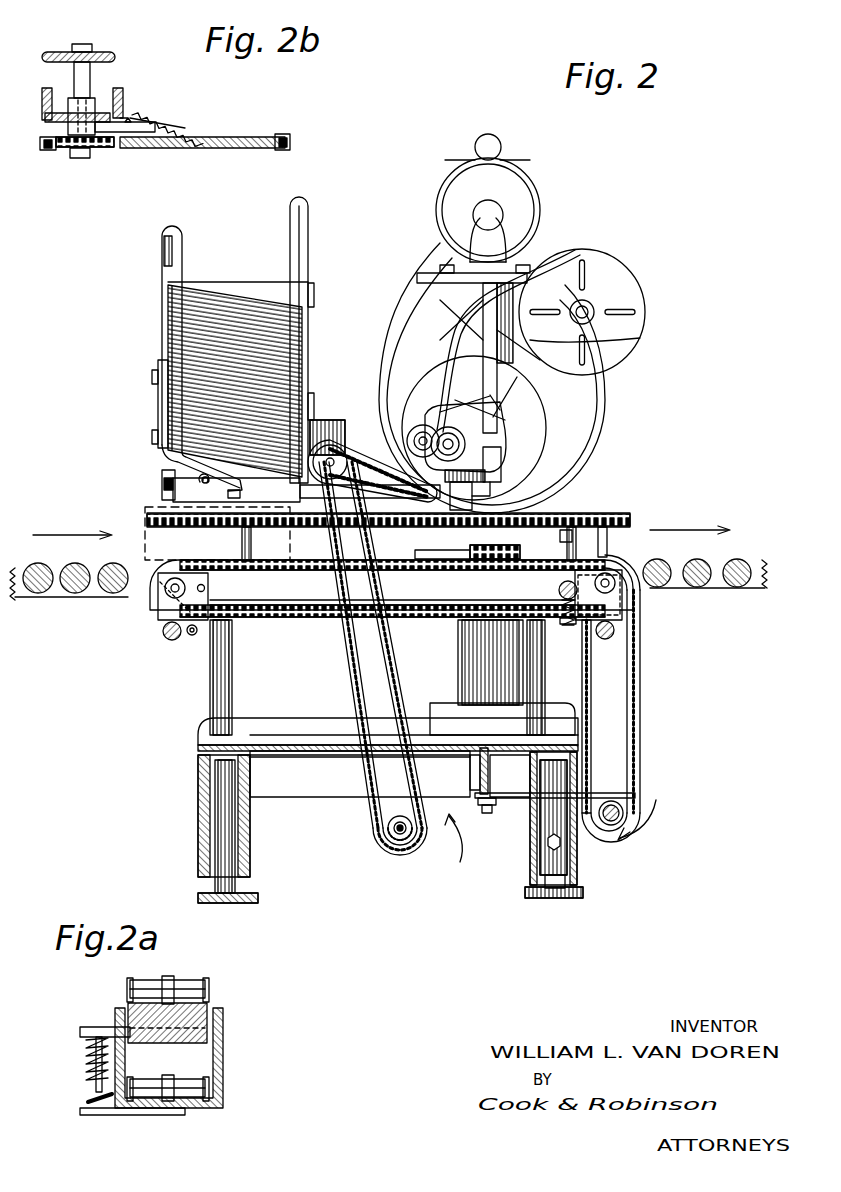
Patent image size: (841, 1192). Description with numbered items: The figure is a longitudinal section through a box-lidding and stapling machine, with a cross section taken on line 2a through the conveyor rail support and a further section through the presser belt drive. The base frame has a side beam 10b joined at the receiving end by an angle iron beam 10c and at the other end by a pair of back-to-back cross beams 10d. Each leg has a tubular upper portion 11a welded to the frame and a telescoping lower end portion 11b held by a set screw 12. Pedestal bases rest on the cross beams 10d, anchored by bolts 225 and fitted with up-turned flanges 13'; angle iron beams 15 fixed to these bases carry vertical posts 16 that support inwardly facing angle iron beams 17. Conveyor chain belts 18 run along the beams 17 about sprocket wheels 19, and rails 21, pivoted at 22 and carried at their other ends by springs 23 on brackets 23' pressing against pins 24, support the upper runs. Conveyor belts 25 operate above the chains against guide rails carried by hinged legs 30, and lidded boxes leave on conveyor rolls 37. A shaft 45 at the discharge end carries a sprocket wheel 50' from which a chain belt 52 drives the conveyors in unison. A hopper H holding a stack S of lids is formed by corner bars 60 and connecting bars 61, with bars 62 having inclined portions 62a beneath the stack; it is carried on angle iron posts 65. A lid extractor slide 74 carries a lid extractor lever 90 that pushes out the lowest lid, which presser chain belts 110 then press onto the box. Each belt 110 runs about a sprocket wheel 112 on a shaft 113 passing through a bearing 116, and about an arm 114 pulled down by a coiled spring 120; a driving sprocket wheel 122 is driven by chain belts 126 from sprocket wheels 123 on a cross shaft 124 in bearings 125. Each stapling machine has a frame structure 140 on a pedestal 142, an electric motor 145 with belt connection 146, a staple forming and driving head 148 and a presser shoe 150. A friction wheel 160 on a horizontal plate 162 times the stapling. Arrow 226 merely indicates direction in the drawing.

In FIG. 2, the section line 2a is at (576, 600).
In FIG. 2, the side beam 10b is at (290, 798).
In FIG. 2, the angle iron beam 10c is at (205, 770).
In FIG. 2, the cross beams 10d is at (480, 772).
In FIG. 2, the tubular upper portion 11a is at (200, 820).
In FIG. 2, the lower end portion 11b is at (205, 860).
In FIG. 2, the set screw 12 is at (565, 845).
In FIG. 2, the up-turned flanges 13' is at (468, 711).
In FIG. 2, the angle iron beams 15 is at (265, 728).
In FIG. 2, the vertical posts 16 is at (210, 710).
In FIG. 2, the angle iron beams 17 is at (425, 618).
In FIG. 2A, the angle iron beams 17 is at (223, 1055).
In FIG. 2, the conveyor chain belts 18 is at (282, 568).
In FIG. 2A, the conveyor chain belts 18 is at (185, 978).
In FIG. 2, the sprocket wheels 19 is at (163, 598).
In FIG. 2, the rails 21 is at (265, 602).
In FIG. 2A, the rails 21 is at (180, 1025).
In FIG. 2, the pivot 22 is at (197, 592).
In FIG. 2, the springs 23 is at (630, 609).
In FIG. 2A, the springs 23 is at (76, 1069).
In FIG. 2, the brackets 23' is at (611, 698).
In FIG. 2A, the brackets 23' is at (132, 1127).
In FIG. 2, the pins 24 is at (560, 592).
In FIG. 2A, the pins 24 is at (82, 1030).
In FIG. 2, the conveyor belts 25 is at (146, 520).
In FIG. 2, the legs 30 is at (242, 542).
In FIG. 2, the conveyor rolls 37 is at (712, 562).
In FIG. 2, the shaft 45 is at (640, 810).
In FIG. 2, the sprocket wheel 50' is at (666, 827).
In FIG. 2, the chain belt 52 is at (640, 746).
In FIG. 2, the corner bars 60 is at (160, 242).
In FIG. 2, the connecting bars 61 is at (254, 282).
In FIG. 2, the bars 62 is at (157, 398).
In FIG. 2, the inclined portions 62a is at (165, 460).
In FIG. 2B, the angle iron posts 65 is at (122, 118).
In FIG. 2, the angle iron posts 65 is at (342, 425).
In FIG. 2, the lid extractor slide 74 is at (190, 498).
In FIG. 2, the lid extractor lever 90 is at (162, 485).
In FIG. 2B, the presser chain belts 110 is at (290, 139).
In FIG. 2, the presser chain belts 110 is at (355, 485).
In FIG. 2B, the sprocket wheel 112 is at (102, 150).
In FIG. 2, the sprocket wheel 112 is at (323, 420).
In FIG. 2, the shaft 113 is at (343, 438).
In FIG. 2B, the arm 114 is at (215, 148).
In FIG. 2, the arm 114 is at (430, 428).
In FIG. 2B, the bearing 116 is at (95, 105).
In FIG. 2B, the coiled spring 120 is at (182, 118).
In FIG. 2B, the driving sprocket wheel 122 is at (108, 52).
In FIG. 2, the sprocket wheels 123 is at (395, 832).
In FIG. 2, the cross shaft 124 is at (400, 840).
In FIG. 2, the bearings 125 is at (378, 818).
In FIG. 2, the chain belts 126 is at (372, 762).
In FIG. 2, the frame structure 140 is at (640, 338).
In FIG. 2, the pedestal 142 is at (470, 688).
In FIG. 2, the electric motor 145 is at (500, 184).
In FIG. 2, the belt connection 146 is at (515, 252).
In FIG. 2, the staple forming and driving head 148 is at (505, 470).
In FIG. 2, the presser shoe 150 is at (500, 496).
In FIG. 2, the friction wheel 160 is at (490, 560).
In FIG. 2, the horizontal plate 162 is at (440, 560).
In FIG. 2, the bolts 225 is at (484, 806).
In FIG. 2, the adjustment direction 226 is at (488, 814).
In FIG. 2, the hopper H is at (213, 248).
In FIG. 2, the stack S is at (302, 333).